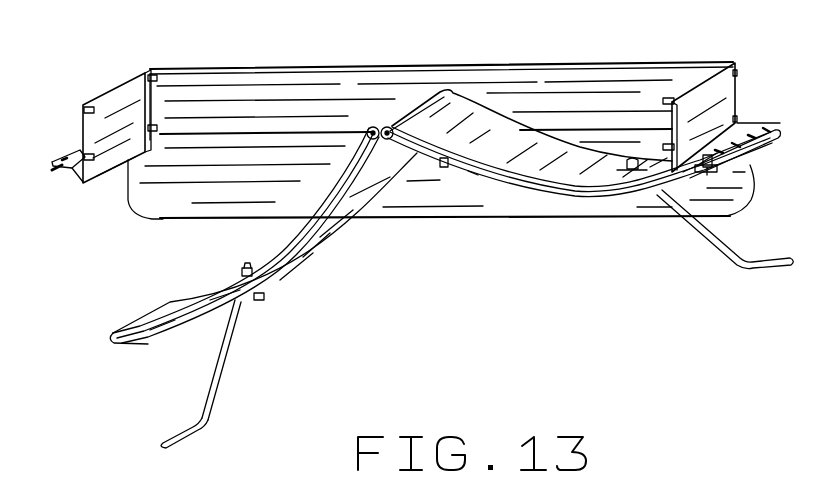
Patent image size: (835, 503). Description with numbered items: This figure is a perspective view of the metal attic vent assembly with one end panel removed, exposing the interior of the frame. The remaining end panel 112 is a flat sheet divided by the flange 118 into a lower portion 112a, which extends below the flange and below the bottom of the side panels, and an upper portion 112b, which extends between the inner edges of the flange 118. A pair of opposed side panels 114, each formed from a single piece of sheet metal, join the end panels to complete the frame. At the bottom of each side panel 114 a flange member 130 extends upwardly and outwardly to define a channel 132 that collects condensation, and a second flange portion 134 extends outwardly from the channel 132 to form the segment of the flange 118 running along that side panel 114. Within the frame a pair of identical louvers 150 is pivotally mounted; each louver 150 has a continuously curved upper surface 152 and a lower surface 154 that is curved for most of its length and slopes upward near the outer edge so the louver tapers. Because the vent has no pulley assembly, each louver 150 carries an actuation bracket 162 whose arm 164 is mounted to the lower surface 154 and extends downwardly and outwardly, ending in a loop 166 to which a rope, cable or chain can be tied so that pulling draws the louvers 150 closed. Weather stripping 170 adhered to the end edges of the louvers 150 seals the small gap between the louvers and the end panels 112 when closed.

The end panel 112 is at (439, 141).
The lower portion 112a is at (171, 200).
The upper portion 112b is at (345, 86).
The side panel 114 is at (109, 90).
The flange 118 is at (757, 125).
The flange member 130 is at (81, 185).
The channel 132 is at (72, 155).
The second flange portion 134 is at (52, 170).
The louver 150 is at (601, 201).
The upper surface 152 is at (500, 151).
The lower surface 154 is at (373, 188).
The actuation bracket 162 is at (472, 337).
The arm 164 is at (212, 373).
The loop 166 is at (180, 440).
The weather stripping 170 is at (515, 184).